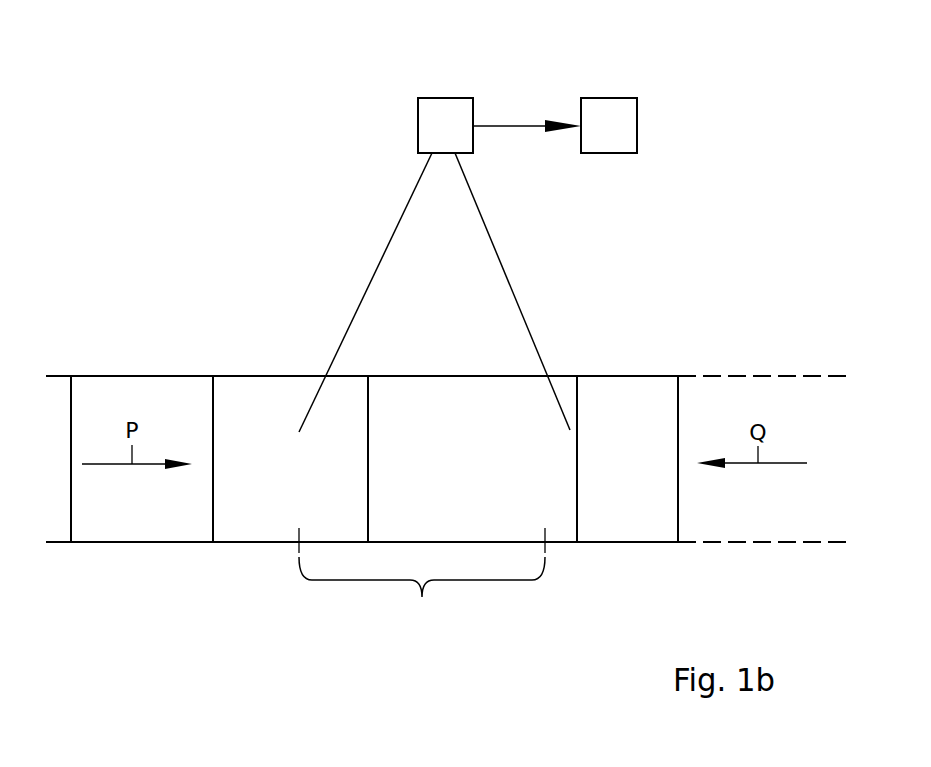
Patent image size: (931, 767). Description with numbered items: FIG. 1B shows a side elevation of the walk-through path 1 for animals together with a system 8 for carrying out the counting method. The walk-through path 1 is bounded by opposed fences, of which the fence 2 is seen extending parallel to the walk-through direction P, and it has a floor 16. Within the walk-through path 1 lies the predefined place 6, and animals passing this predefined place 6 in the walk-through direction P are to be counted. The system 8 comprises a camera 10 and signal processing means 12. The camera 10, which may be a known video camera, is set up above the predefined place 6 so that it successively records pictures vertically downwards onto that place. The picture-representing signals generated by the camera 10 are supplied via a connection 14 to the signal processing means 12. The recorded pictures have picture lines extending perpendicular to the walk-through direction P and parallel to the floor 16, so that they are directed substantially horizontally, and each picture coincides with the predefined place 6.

The walk-through path 1 is at (161, 518).
The fence 2 is at (153, 376).
The floor 16 is at (153, 543).
The predefined place 6 is at (422, 577).
The system 8 is at (516, 201).
The camera 10 is at (445, 113).
The signal processing means 12 is at (608, 113).
The connection 14 is at (523, 126).